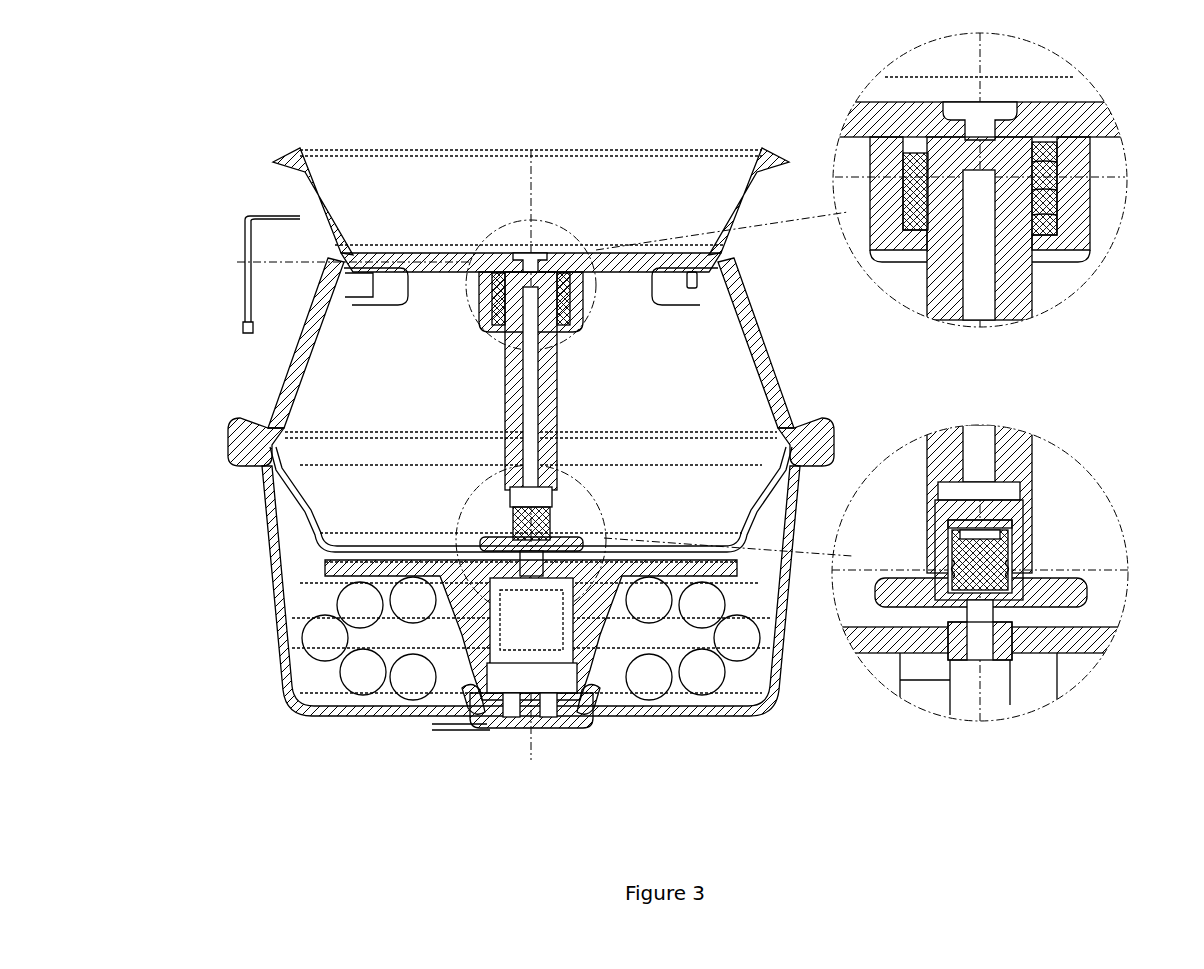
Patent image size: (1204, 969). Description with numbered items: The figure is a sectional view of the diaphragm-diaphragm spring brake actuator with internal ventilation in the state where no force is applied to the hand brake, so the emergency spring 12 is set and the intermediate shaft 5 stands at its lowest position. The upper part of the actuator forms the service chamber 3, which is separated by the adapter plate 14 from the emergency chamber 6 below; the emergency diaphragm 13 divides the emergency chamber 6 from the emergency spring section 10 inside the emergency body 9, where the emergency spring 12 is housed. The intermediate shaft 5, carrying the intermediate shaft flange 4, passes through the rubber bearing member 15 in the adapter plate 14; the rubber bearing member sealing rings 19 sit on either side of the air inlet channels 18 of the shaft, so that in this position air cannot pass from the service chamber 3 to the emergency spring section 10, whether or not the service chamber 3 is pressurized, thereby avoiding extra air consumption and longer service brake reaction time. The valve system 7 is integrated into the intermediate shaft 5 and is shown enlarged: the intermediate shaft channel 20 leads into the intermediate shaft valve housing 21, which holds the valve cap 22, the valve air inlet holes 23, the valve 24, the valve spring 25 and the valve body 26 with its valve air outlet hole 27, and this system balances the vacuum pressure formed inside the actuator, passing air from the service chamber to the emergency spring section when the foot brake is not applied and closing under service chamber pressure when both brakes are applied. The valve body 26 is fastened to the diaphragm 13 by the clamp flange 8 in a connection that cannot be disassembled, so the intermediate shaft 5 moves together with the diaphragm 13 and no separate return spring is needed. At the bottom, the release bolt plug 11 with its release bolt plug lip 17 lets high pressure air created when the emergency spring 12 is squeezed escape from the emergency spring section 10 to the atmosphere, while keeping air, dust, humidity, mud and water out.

The service chamber 3 is at (355, 195).
The intermediate shaft flange 4 is at (447, 262).
The intermediate shaft 5 is at (503, 401).
The emergency chamber 6 is at (355, 332).
The valve system 7 is at (547, 521).
The clamp flange 8 is at (1060, 638).
The emergency body 9 is at (272, 610).
The emergency spring section 10 is at (292, 540).
The release bolt plug 11 is at (502, 736).
The emergency spring 12 is at (357, 682).
The emergency diaphragm 13 is at (302, 498).
The adapter plate 14 is at (285, 365).
The rubber bearing member 15 is at (908, 176).
The release bolt plug lip 17 is at (480, 714).
The air inlet channels 18 is at (1016, 176).
The rubber bearing member sealing rings 19 is at (1040, 168).
The intermediate shaft channel 20 is at (985, 437).
The intermediate shaft valve housing 21 is at (1005, 490).
The valve cap 22 is at (957, 512).
The valve air inlet holes 23 is at (985, 522).
The valve 24 is at (989, 548).
The valve spring 25 is at (1012, 574).
The valve body 26 is at (1054, 590).
The valve air outlet hole 27 is at (987, 637).